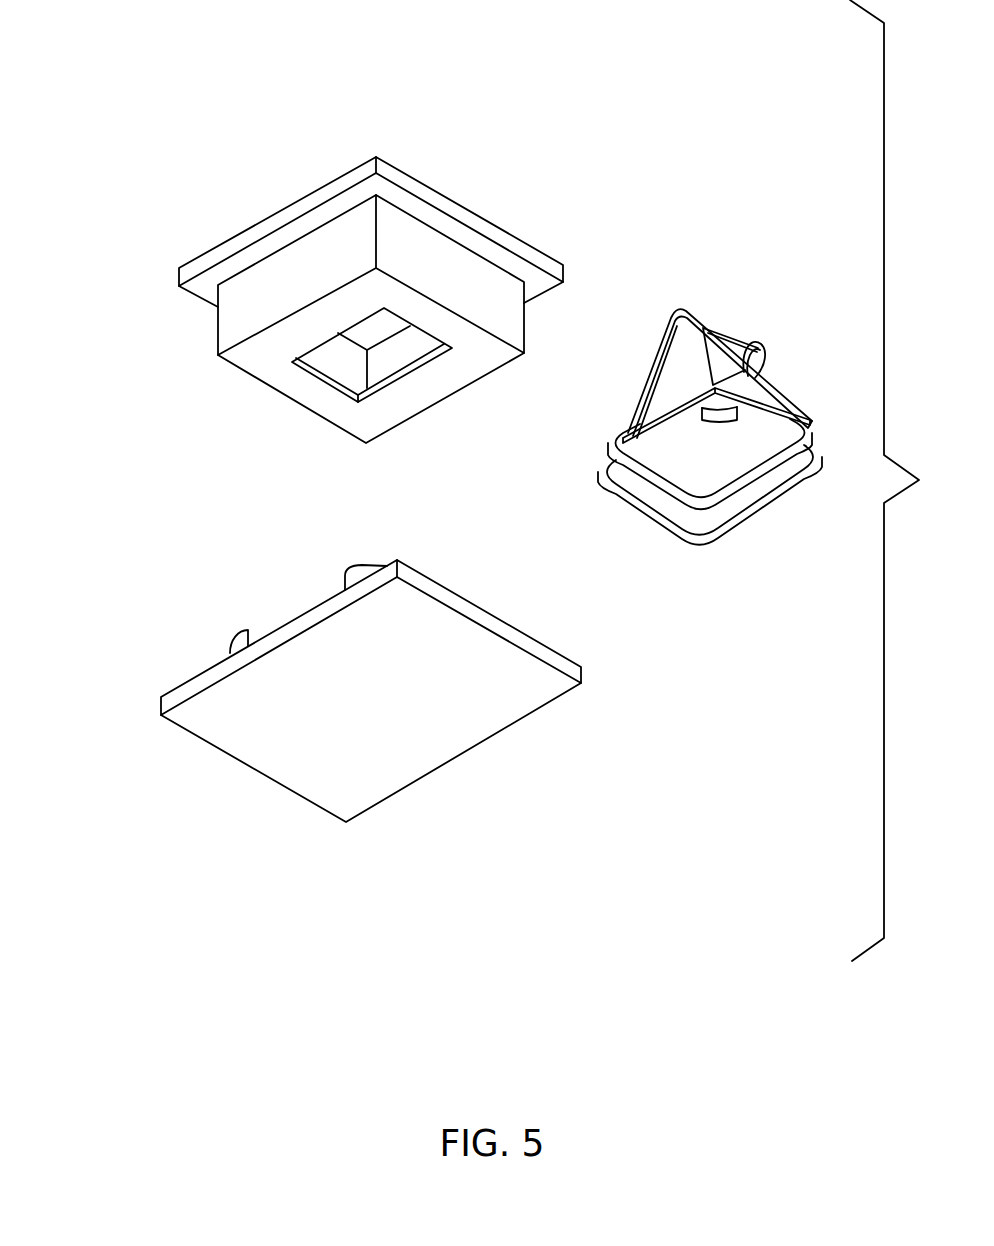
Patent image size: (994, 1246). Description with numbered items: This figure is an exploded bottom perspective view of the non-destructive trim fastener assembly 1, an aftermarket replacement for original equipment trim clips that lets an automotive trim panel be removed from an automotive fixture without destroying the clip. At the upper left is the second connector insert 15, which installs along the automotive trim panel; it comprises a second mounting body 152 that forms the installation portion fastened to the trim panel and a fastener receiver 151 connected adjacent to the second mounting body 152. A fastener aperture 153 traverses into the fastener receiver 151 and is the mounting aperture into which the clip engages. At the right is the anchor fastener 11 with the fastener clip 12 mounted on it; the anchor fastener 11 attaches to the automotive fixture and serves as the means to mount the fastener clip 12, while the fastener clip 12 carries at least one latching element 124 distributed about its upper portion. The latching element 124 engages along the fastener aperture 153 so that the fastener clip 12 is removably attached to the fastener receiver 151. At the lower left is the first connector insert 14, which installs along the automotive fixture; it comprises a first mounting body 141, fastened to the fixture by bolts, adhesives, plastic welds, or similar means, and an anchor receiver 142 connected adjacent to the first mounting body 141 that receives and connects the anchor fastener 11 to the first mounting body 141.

The non-destructive trim fastener assembly 1 is at (896, 480).
The anchor fastener 11 is at (779, 515).
The fastener clip 12 is at (749, 334).
The latching element 124 is at (756, 338).
The first connector insert 14 is at (317, 684).
The first mounting body 141 is at (490, 613).
The anchor receiver 142 is at (265, 618).
The second connector insert 15 is at (372, 255).
The fastener receiver 151 is at (218, 356).
The second mounting body 152 is at (485, 216).
The fastener aperture 153 is at (384, 362).